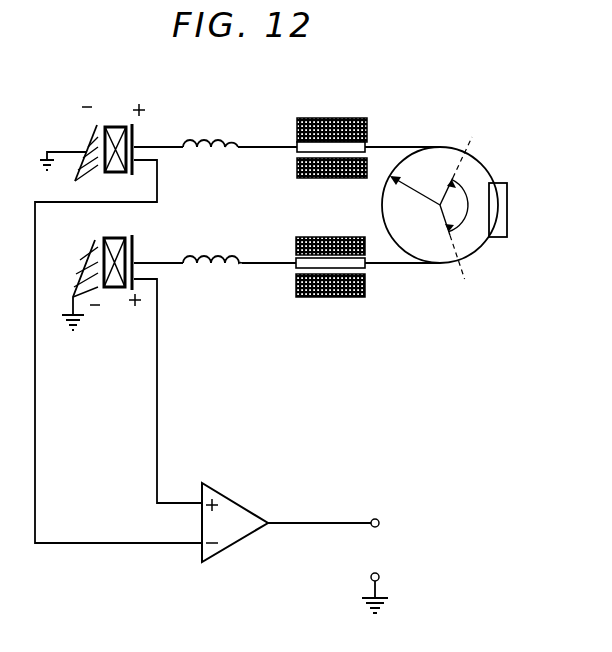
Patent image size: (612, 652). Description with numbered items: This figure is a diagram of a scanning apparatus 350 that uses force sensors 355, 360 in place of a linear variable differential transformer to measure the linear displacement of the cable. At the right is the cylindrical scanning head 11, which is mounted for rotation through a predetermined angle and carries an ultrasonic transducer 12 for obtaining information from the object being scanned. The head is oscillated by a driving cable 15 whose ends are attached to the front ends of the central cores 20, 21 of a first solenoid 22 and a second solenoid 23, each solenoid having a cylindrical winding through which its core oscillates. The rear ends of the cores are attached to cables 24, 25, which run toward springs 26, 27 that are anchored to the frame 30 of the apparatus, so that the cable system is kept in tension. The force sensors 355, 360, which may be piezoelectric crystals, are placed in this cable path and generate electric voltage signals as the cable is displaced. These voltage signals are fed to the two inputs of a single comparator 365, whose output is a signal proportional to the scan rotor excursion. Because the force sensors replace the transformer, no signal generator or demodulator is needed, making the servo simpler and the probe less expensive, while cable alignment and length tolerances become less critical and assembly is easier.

The cylindrical scanning head 11 is at (473, 167).
The ultrasonic transducer 12 is at (507, 191).
The driving cable 15 is at (397, 145).
The central core of first solenoid 20 is at (367, 142).
The central core of second solenoid 21 is at (366, 268).
The first solenoid 22 is at (344, 118).
The second solenoid 23 is at (348, 238).
The cable 24 is at (270, 143).
The cable 25 is at (263, 269).
The spring 26 is at (208, 141).
The spring 27 is at (225, 241).
The frame 30 is at (85, 148).
The scanning apparatus 350 is at (483, 74).
The force sensor 355 is at (85, 260).
The force sensor 360 is at (115, 127).
The comparator 365 is at (228, 546).